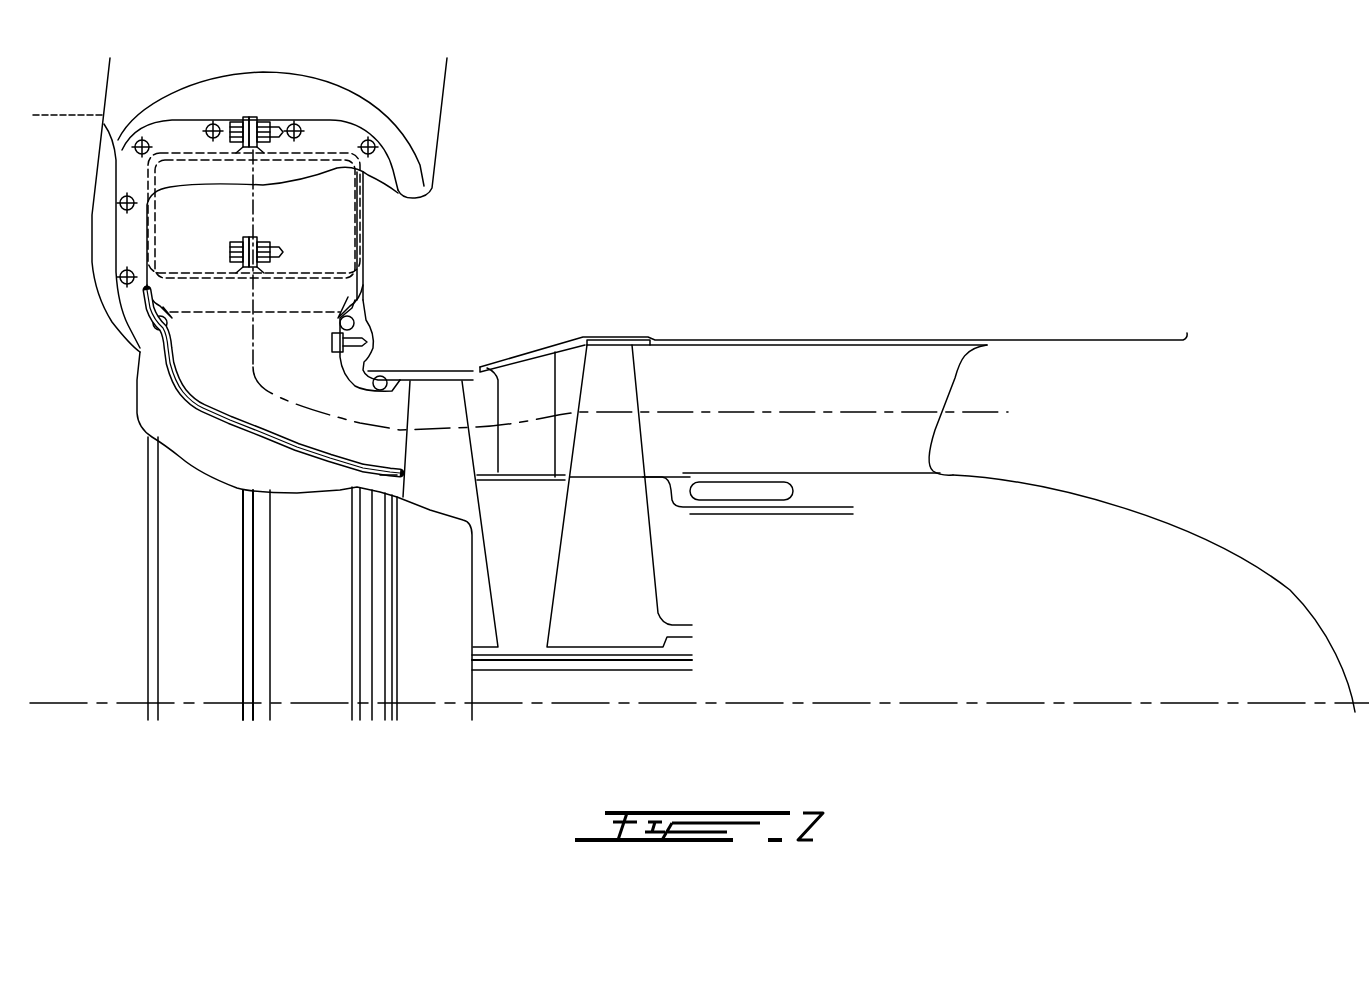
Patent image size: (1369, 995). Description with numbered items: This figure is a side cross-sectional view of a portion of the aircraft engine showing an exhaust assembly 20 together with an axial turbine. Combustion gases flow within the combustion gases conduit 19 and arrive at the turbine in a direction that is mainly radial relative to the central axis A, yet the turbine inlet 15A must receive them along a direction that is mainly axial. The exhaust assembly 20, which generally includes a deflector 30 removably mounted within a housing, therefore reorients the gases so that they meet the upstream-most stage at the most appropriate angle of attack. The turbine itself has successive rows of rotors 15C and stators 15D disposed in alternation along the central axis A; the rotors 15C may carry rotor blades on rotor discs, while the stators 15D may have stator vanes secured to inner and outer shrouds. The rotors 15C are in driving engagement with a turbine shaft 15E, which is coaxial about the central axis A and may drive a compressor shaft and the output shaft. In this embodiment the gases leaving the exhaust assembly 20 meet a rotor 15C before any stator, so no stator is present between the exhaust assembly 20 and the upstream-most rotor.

The combustion gases conduit 19 is at (434, 83).
The exhaust assembly 20 is at (122, 450).
The deflector 30 is at (222, 380).
The turbine inlet 15A is at (407, 443).
The rotors 15C is at (440, 407).
The stators 15D is at (533, 385).
The turbine shaft 15E is at (581, 665).
The central axis A is at (1187, 705).